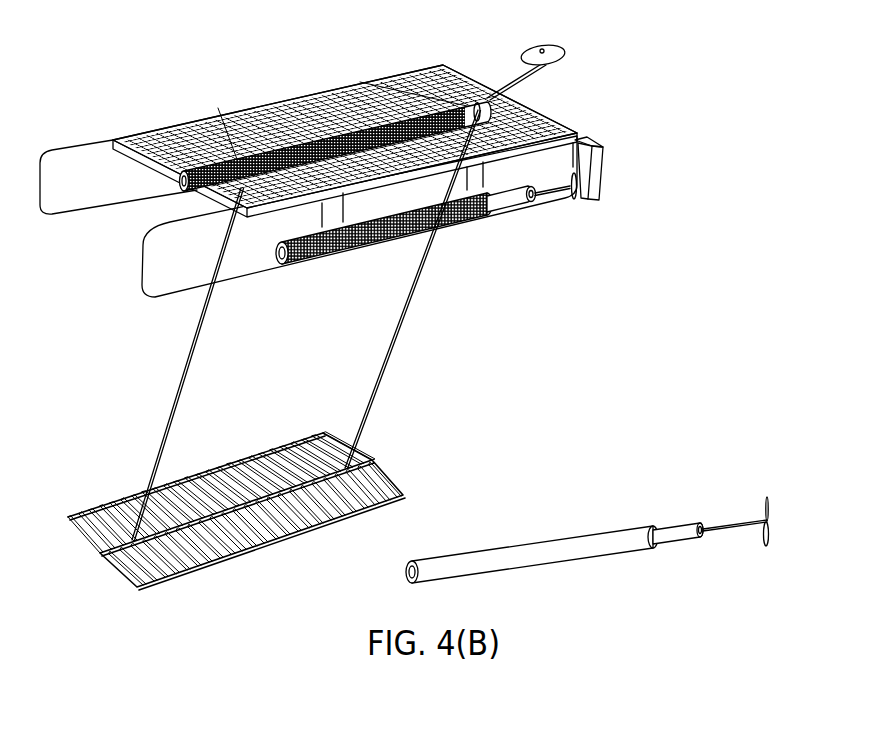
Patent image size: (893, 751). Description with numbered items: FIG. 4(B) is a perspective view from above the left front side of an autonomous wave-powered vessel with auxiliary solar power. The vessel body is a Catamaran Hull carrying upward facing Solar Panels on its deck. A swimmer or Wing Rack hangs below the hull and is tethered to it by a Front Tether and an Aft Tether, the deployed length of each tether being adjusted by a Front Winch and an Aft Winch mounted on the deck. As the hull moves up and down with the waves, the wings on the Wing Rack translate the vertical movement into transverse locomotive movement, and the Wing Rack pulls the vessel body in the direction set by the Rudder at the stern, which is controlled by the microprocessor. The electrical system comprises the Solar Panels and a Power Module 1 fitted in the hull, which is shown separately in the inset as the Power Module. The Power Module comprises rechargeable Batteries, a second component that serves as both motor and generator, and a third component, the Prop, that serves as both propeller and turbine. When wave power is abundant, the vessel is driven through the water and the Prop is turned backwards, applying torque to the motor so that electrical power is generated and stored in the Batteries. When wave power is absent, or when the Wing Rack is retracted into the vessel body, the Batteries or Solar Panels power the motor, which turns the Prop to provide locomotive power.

The catamaran hull Catamaran Hull is at (303, 216).
The solar panels Solar Panels is at (287, 102).
The front winch Front Winch is at (243, 162).
The aft winch Aft Winch is at (477, 108).
The rudder Rudder is at (605, 172).
The power module Power Module 1 is at (458, 219).
The forward tether Front Tether is at (172, 388).
The aft tether Aft Tether is at (388, 353).
The wing-rack Wing Rack is at (236, 562).
The power module Power Module is at (610, 531).
The rechargeable batteries Batteries is at (505, 541).
The propeller Prop is at (778, 511).